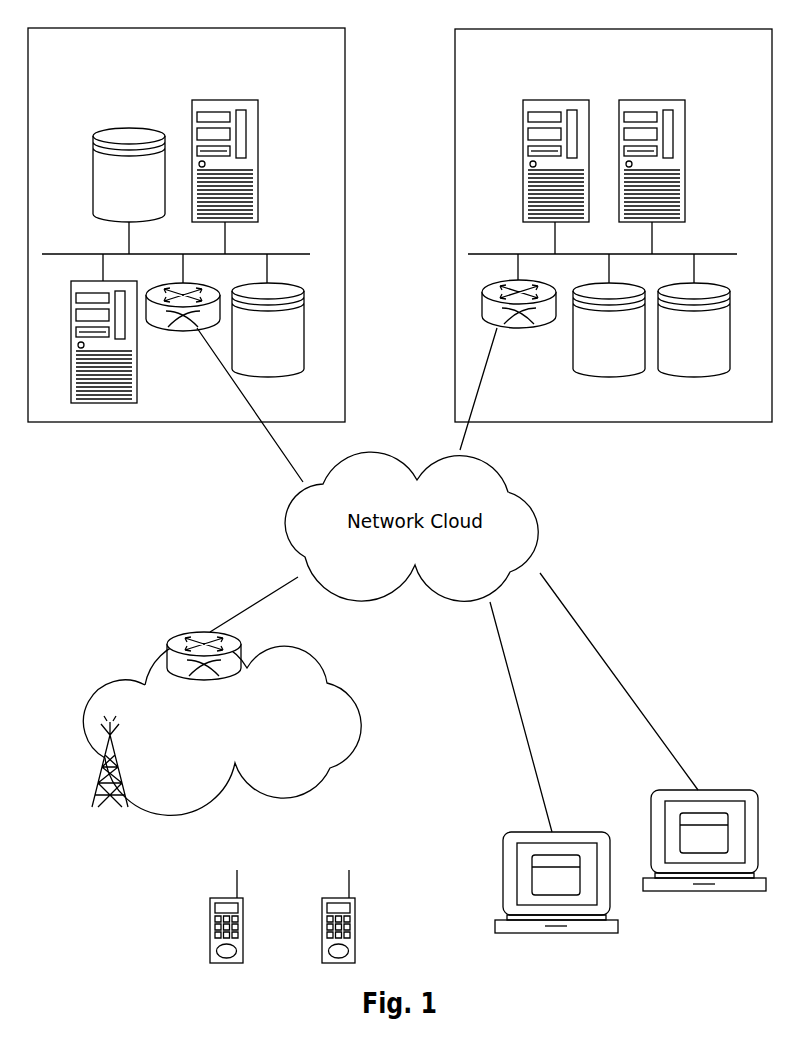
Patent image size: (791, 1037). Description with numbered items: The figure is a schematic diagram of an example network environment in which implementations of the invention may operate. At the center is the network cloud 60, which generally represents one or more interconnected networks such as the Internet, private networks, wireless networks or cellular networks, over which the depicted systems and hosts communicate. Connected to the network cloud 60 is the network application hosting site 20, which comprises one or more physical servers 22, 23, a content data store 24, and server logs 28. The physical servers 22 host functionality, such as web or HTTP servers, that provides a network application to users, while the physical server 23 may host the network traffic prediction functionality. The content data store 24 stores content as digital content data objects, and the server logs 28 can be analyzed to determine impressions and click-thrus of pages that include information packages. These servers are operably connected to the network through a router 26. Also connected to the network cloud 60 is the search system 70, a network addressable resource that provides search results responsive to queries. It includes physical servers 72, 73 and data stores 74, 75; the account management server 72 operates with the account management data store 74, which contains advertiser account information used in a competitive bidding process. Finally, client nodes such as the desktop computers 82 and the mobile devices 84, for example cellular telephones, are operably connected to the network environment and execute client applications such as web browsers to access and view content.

The network application hosting site 20 is at (217, 225).
The physical server 22 is at (260, 143).
The physical server 23 is at (72, 352).
The content data store 24 is at (93, 180).
The router 26 is at (183, 332).
The server logs 28 is at (302, 343).
The network cloud 60 is at (87, 635).
The search system 70 is at (585, 225).
The account management server 72 is at (523, 178).
The physical server 73 is at (685, 142).
The account management data store 74 is at (573, 358).
The data store 75 is at (729, 345).
The client node 82 is at (503, 873).
The mobile device 84 is at (210, 947).